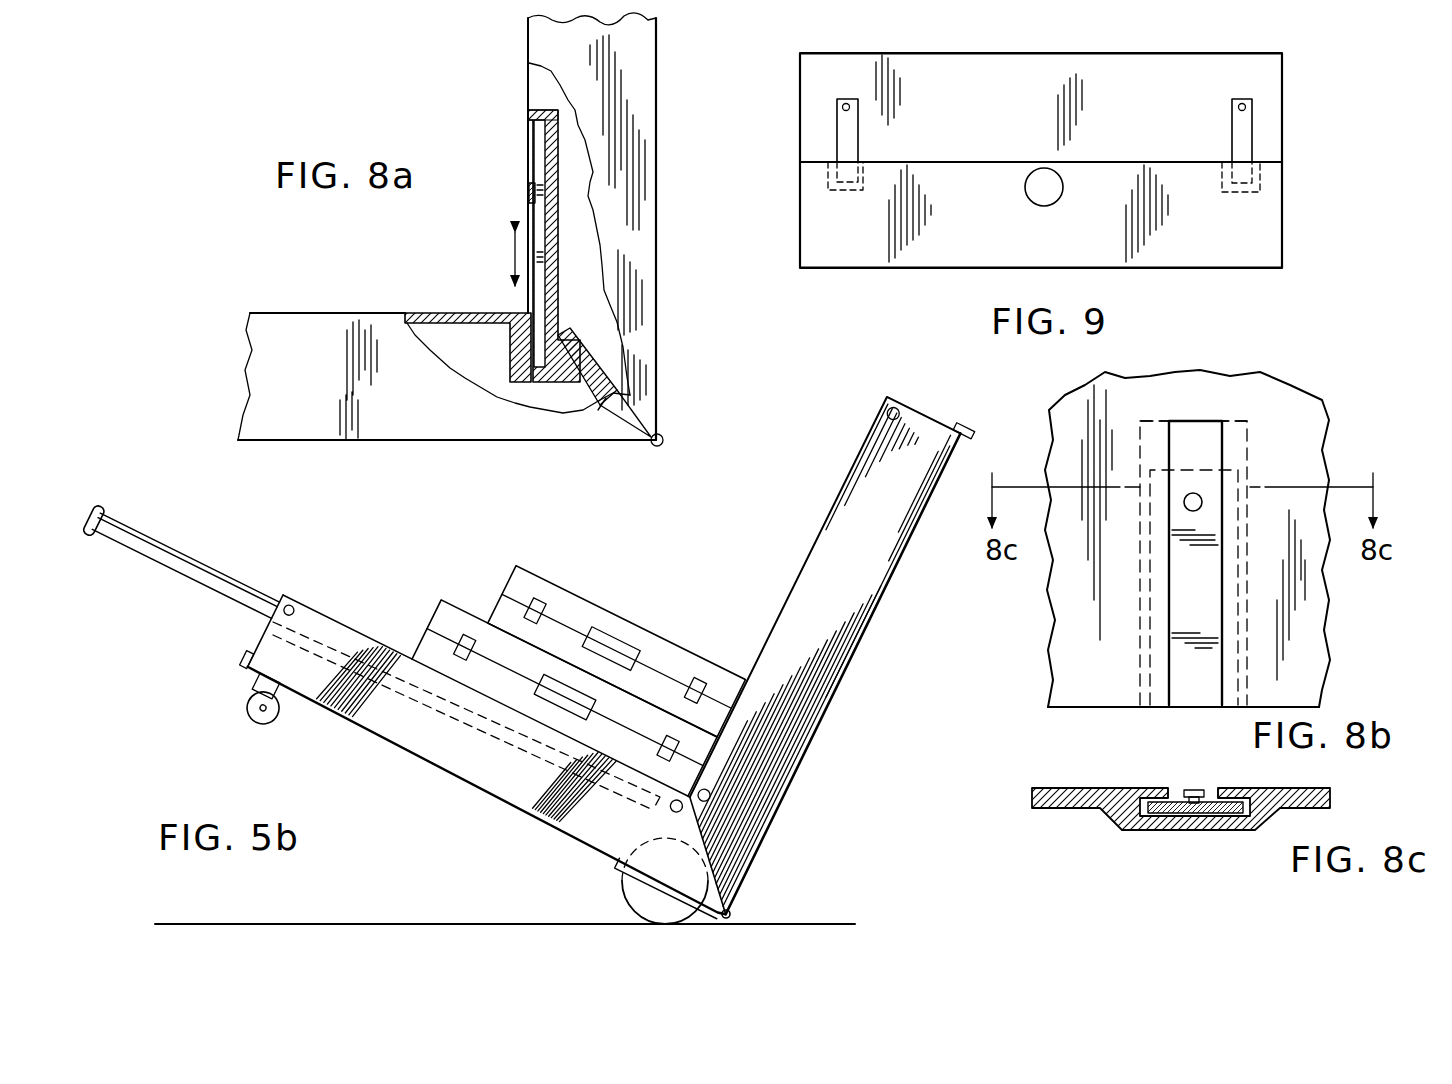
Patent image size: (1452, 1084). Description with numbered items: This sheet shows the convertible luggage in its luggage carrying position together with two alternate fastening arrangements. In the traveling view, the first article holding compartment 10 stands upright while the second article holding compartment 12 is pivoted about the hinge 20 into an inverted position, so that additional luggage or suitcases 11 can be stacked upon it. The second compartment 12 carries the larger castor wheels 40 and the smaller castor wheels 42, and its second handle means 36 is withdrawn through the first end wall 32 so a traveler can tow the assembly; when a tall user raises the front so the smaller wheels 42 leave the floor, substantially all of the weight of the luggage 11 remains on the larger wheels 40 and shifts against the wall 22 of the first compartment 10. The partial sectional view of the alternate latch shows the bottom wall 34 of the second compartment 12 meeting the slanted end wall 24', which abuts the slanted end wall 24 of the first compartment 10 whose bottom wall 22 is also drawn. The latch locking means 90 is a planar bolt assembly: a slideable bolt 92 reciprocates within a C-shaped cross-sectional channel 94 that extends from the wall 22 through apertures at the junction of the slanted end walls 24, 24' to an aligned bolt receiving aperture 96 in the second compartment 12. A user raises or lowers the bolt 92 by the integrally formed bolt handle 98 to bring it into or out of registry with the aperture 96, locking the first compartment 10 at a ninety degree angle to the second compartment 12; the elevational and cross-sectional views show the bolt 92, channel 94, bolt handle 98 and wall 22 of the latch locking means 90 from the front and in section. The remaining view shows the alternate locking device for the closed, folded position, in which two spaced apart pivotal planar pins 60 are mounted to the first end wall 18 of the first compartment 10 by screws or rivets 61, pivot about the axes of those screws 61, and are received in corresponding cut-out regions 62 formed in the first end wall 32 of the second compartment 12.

In FIG. 8A, the first article holding compartment 10 is at (660, 216).
In FIG. 9, the first article holding compartment 10 is at (1284, 133).
In FIG. 8B, the first article holding compartment 10 is at (1048, 650).
In FIG. 8C, the first article holding compartment 10 is at (1305, 805).
In FIG. 5B, the first article holding compartment 10 is at (840, 680).
In FIG. 5B, the additional luggage or suitcases 11 is at (457, 605).
In FIG. 8A, the second article holding compartment 12 is at (388, 443).
In FIG. 9, the second article holding compartment 12 is at (1284, 222).
In FIG. 5B, the second article holding compartment 12 is at (438, 767).
In FIG. 9, the first end wall 18 is at (975, 88).
In FIG. 5B, the hinge 20 is at (740, 911).
In FIG. 8A, the bottom wall 22 is at (528, 45).
In FIG. 8B, the bottom wall 22 is at (1300, 652).
In FIG. 8C, the bottom wall 22 is at (1290, 787).
In FIG. 8A, the slanted end wall 24 is at (636, 369).
In FIG. 8A, the slanted end wall 24' is at (577, 441).
In FIG. 9, the first end wall 32 is at (940, 240).
In FIG. 8A, the bottom wall 34 is at (340, 313).
In FIG. 9, the second handle means 36 is at (1032, 200).
In FIG. 5B, the second handle means 36 is at (196, 566).
In FIG. 5B, the castor wheels 40 is at (635, 893).
In FIG. 5B, the castor wheels 42 is at (275, 717).
In FIG. 9, the pivotal planar pins 60 is at (842, 133).
In FIG. 9, the screws or rivets 61 is at (842, 103).
In FIG. 9, the cut-out regions 62 is at (858, 192).
In FIG. 8A, the latch locking means 90 is at (512, 175).
In FIG. 8B, the latch locking means 90 is at (1268, 405).
In FIG. 8C, the latch locking means 90 is at (1105, 828).
In FIG. 8A, the slideable bolt 92 is at (543, 247).
In FIG. 8B, the slideable bolt 92 is at (1208, 575).
In FIG. 8A, the C-shaped cross-sectional channel 94 is at (550, 292).
In FIG. 8B, the C-shaped cross-sectional channel 94 is at (1243, 612).
In FIG. 8C, the C-shaped cross-sectional channel 94 is at (1242, 813).
In FIG. 8A, the bolt receiving aperture 96 is at (523, 383).
In FIG. 8A, the bolt handle 98 is at (532, 208).
In FIG. 8B, the bolt handle 98 is at (1200, 500).
In FIG. 8C, the bolt handle 98 is at (1185, 790).